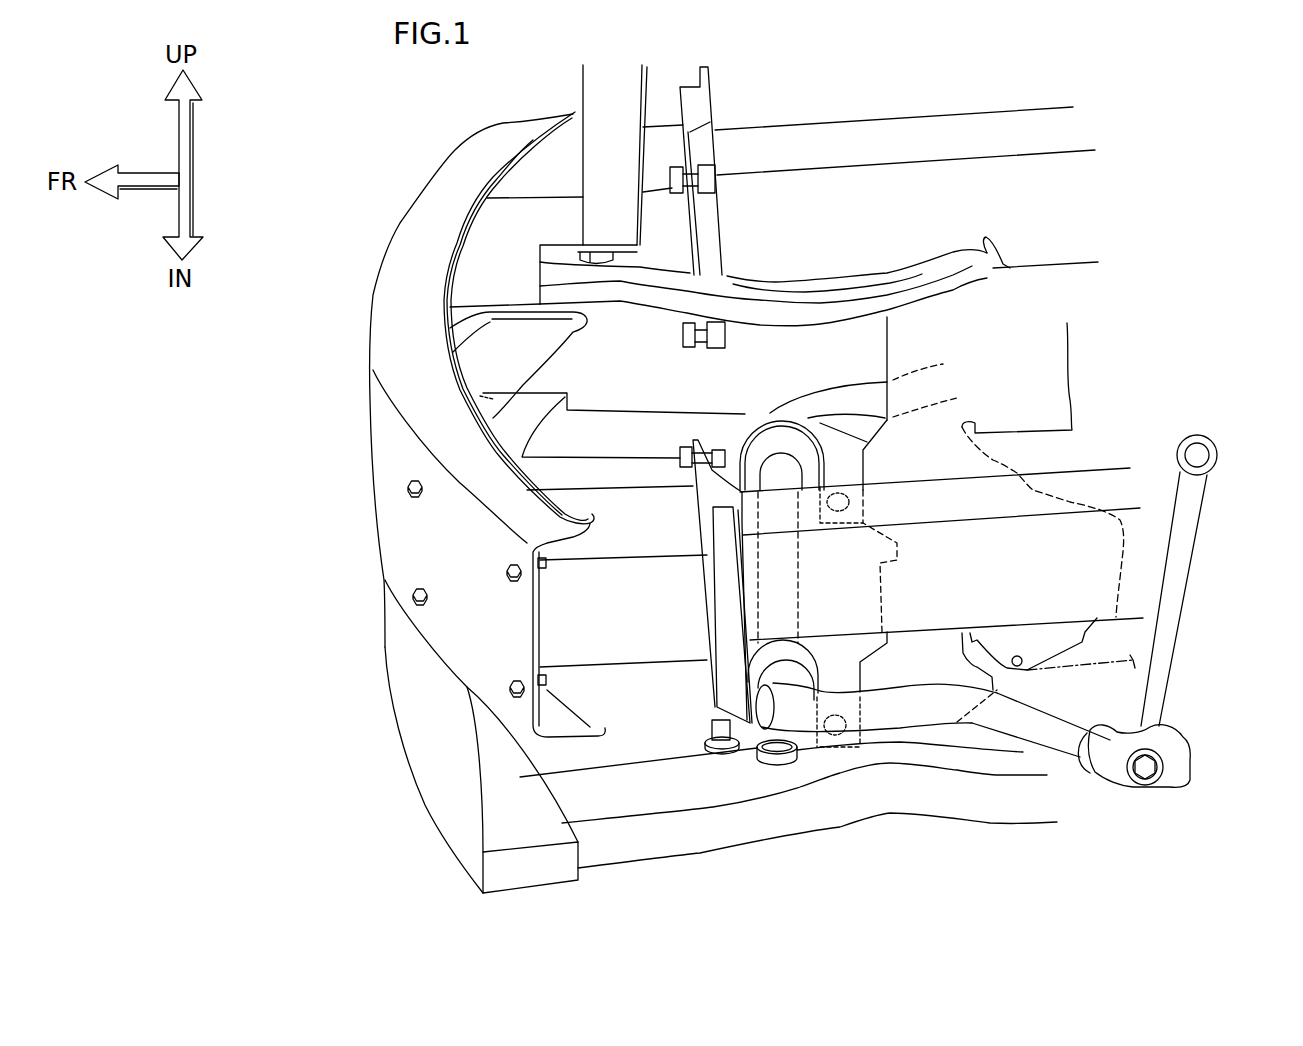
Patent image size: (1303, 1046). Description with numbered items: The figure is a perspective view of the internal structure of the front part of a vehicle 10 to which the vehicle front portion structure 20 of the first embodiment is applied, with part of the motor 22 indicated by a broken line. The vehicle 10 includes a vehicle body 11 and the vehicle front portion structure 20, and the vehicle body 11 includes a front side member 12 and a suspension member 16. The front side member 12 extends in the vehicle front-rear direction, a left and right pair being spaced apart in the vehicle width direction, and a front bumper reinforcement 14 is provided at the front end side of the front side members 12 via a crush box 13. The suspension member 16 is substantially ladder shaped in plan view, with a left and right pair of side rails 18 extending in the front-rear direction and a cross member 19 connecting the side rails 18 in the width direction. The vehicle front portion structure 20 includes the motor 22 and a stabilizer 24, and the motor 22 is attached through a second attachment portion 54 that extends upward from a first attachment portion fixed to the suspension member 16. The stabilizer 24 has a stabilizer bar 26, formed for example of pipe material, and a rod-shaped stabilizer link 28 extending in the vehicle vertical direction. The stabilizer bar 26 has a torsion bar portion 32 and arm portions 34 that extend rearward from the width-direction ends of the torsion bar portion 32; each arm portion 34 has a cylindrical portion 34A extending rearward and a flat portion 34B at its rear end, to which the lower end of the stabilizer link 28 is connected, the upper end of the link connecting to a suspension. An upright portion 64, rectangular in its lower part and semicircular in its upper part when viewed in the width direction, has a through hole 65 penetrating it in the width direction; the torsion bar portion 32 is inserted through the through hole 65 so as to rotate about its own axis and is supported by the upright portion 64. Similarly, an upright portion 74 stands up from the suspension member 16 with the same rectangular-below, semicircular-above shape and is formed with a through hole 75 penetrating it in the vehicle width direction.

The vehicle 10 is at (348, 147).
The vehicle body 11 is at (1005, 102).
The front side member 12 is at (890, 118).
The crush box 13 is at (665, 140).
The front bumper reinforcement 14 is at (383, 443).
The suspension member 16 is at (833, 807).
The side rail 18 is at (623, 410).
The cross member 19 is at (405, 760).
The vehicle front portion structure 20 is at (1083, 387).
The motor 22 is at (1087, 670).
The stabilizer 24 is at (1118, 797).
The stabilizer bar 26 is at (1040, 752).
The stabilizer link 28 is at (1184, 596).
The torsion bar portion 32 is at (805, 580).
The arm portion 34 is at (815, 383).
The cylindrical portion 34A is at (917, 707).
The flat portion 34B is at (1185, 755).
The second attachment portion 54 is at (1072, 348).
The upright portion 64 is at (753, 415).
The through hole 65 is at (780, 457).
The upright portion 74 is at (778, 643).
The through hole 75 is at (767, 727).